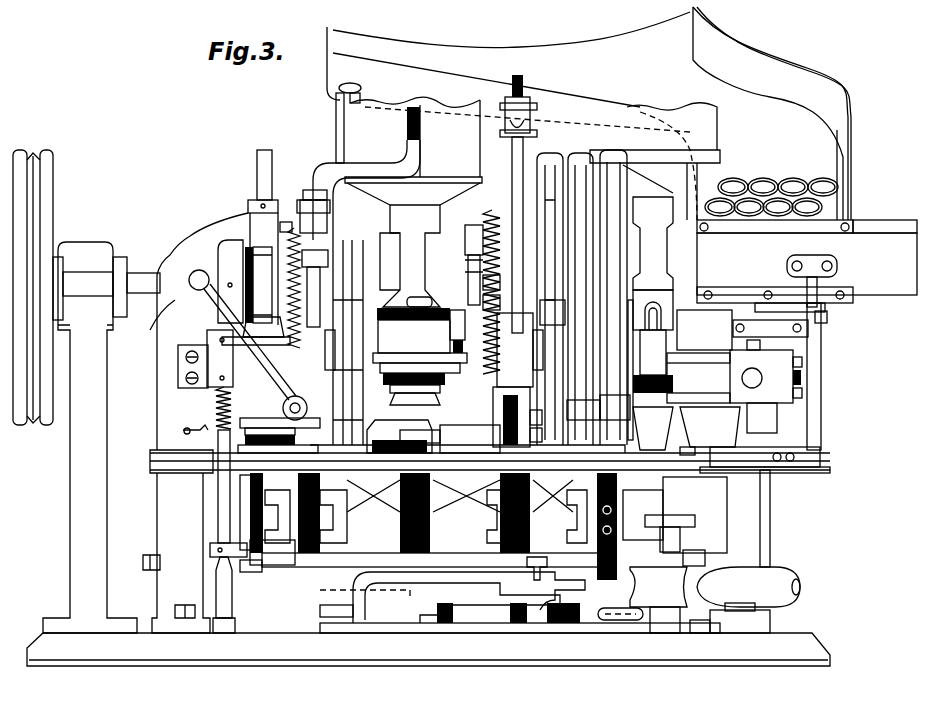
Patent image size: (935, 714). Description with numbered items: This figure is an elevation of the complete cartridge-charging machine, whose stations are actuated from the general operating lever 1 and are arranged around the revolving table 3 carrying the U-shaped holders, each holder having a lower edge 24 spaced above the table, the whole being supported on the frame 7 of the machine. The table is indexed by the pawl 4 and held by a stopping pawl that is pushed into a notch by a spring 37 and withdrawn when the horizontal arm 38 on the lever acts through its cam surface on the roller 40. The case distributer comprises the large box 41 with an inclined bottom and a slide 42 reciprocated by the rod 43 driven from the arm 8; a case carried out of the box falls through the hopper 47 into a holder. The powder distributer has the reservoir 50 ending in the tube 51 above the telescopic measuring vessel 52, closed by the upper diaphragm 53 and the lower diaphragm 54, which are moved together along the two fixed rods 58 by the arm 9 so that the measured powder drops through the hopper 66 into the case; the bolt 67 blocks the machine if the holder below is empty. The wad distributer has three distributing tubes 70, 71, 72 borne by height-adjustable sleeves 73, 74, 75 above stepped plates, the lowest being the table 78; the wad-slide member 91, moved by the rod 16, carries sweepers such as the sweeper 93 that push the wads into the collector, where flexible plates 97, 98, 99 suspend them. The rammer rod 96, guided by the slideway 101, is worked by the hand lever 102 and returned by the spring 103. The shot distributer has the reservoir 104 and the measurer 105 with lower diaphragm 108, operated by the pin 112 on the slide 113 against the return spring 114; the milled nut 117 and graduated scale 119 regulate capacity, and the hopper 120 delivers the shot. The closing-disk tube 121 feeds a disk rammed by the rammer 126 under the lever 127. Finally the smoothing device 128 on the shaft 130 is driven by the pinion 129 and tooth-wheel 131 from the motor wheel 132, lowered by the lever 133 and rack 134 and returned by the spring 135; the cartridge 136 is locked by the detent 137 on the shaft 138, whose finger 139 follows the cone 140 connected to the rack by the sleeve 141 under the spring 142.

The operating lever 1 is at (780, 570).
The table 3 is at (292, 567).
The pawl 4 is at (542, 565).
The frame post 7 is at (770, 525).
The arm 8 is at (783, 305).
The arm 9 is at (778, 418).
The rod 16 is at (720, 490).
The lower edge of holder 24 is at (450, 540).
The spring 37 is at (630, 620).
The horizontal arm 38 is at (695, 521).
The roller 40 is at (680, 537).
The case reservoir box 41 is at (762, 52).
The slide 42 is at (903, 226).
The rod 43 is at (827, 318).
The hopper 47 is at (690, 325).
The powder reservoir 50 is at (726, 140).
The tube 51 is at (660, 252).
The measuring vessel 52 is at (675, 360).
The diaphragm 53 is at (728, 338).
The diaphragm 54 is at (686, 453).
The fixed rods 58 is at (803, 380).
The hopper 66 is at (652, 445).
The bolt 67 is at (705, 558).
The distributing tube 70 is at (609, 150).
The distributing tube 71 is at (578, 153).
The distributing tube 72 is at (545, 153).
The sleeve 73 is at (608, 320).
The sleeve 74 is at (566, 310).
The sleeve 75 is at (540, 333).
The table 78 is at (738, 455).
The wad-slide member 91 is at (785, 470).
The sweeper 93 is at (712, 420).
The rod 96 is at (512, 255).
The flexible plate 97 is at (530, 437).
The flexible plate 98 is at (530, 422).
The flexible plate 99 is at (520, 387).
The slideway 101 is at (484, 283).
The hand lever 102 is at (525, 85).
The spring 103 is at (486, 228).
The shot reservoir 104 is at (470, 100).
The measuring vessel 105 is at (448, 370).
The lower diaphragm 108 is at (435, 408).
The pin 112 is at (482, 425).
The slide 113 is at (445, 453).
The return spring 114 is at (484, 300).
The milled nut 117 is at (405, 380).
The graduated scale 119 is at (366, 428).
The hopper 120 is at (404, 436).
The tube 121 is at (362, 90).
The rammer 126 is at (262, 425).
The lever 127 is at (421, 140).
The smoothing device 128 is at (258, 458).
The pinion 129 is at (258, 240).
The shaft 130 is at (268, 175).
The tooth-wheel 131 is at (225, 256).
The wheel 132 is at (48, 190).
The lever 133 is at (212, 292).
The rack 134 is at (283, 404).
The spring 135 is at (287, 212).
The cartridge 136 is at (240, 493).
The detent 137 is at (240, 545).
The shaft 138 is at (218, 515).
The finger 139 is at (222, 340).
The cone 140 is at (243, 325).
The sleeve 141 is at (242, 370).
The spring 142 is at (218, 410).